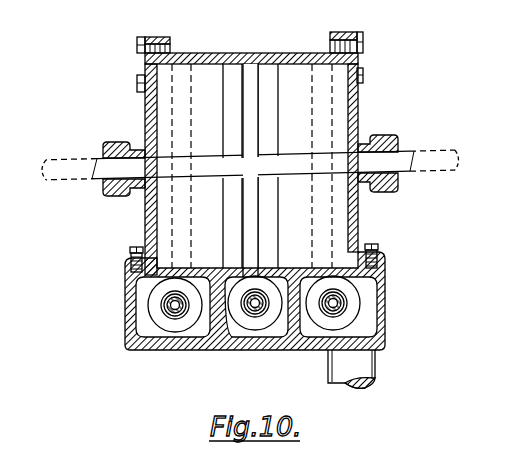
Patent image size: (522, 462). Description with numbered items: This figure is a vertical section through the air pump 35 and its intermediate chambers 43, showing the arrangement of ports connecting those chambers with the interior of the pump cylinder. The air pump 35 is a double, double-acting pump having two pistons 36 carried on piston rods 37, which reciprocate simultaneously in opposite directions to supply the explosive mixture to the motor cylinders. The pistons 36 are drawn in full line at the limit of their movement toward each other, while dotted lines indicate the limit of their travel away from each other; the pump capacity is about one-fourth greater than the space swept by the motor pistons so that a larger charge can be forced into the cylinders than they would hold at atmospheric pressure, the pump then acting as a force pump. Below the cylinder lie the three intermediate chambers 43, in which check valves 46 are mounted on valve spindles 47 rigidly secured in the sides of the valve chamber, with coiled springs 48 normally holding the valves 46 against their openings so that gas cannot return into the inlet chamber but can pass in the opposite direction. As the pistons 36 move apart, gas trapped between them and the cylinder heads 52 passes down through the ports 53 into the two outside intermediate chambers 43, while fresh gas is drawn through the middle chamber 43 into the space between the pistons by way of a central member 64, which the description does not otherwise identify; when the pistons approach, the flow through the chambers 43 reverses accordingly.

The air pump 35 is at (280, 46).
The pistons 36 is at (231, 108).
The piston rods 37 is at (217, 172).
The intermediate chambers 43 is at (152, 350).
The check valves 46 is at (153, 302).
The valve spindles 47 is at (178, 308).
The coiled springs 48 is at (163, 312).
The heads 52 is at (145, 110).
The ports 53 is at (165, 273).
The central rod 64 is at (253, 268).